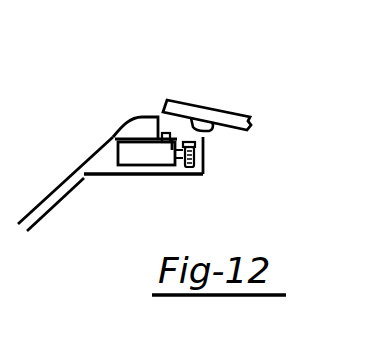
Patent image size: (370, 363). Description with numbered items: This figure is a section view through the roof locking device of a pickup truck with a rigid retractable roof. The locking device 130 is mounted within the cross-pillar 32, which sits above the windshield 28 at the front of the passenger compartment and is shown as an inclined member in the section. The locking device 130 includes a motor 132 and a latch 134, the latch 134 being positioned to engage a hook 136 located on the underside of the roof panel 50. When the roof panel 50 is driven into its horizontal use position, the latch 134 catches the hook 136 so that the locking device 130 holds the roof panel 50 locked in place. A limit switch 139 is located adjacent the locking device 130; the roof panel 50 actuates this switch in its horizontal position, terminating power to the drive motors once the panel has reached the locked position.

The windshield 28 is at (42, 201).
The locking device 130 is at (128, 157).
The motor 132 is at (166, 157).
The cross-pillar 32 is at (153, 175).
The limit switch 139 is at (166, 134).
The latch 134 is at (195, 155).
The roof panel 50 is at (212, 103).
The hook 136 is at (212, 130).